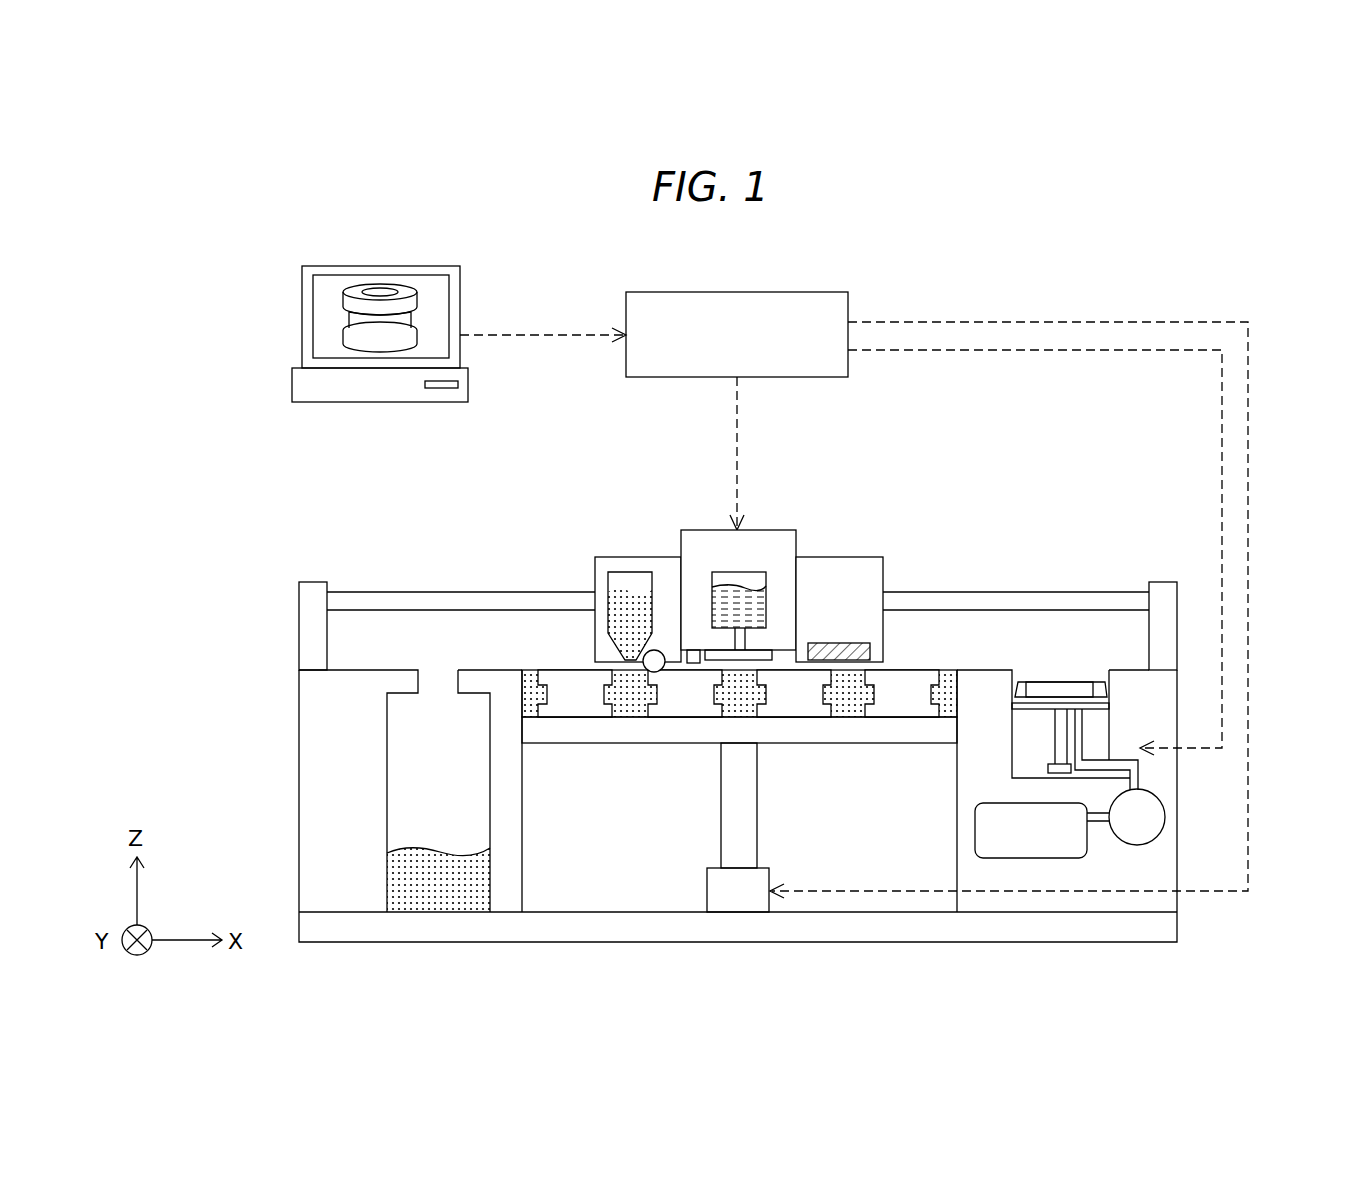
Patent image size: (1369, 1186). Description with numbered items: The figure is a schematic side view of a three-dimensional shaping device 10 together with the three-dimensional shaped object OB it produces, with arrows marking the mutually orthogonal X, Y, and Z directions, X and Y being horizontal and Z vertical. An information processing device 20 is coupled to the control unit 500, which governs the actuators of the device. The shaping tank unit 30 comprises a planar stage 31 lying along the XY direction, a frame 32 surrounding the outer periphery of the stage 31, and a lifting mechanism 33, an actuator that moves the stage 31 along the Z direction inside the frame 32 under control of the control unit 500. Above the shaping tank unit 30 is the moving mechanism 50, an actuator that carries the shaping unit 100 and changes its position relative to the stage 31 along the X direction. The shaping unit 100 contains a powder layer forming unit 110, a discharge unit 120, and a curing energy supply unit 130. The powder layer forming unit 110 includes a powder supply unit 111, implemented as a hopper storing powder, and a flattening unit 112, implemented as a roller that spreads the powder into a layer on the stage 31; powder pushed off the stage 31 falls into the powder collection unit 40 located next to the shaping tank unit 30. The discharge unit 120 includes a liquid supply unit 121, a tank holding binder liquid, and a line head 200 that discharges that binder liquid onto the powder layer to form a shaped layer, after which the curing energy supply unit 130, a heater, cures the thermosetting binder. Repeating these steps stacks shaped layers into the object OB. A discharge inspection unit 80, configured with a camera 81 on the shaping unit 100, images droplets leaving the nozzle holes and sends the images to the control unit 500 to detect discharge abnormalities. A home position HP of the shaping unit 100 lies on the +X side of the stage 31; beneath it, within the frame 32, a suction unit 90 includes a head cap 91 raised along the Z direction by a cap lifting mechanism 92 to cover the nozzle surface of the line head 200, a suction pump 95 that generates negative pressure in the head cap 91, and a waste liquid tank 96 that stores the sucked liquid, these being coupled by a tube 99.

The three-dimensional shaping device 10 is at (1107, 278).
The information processing device 20 is at (292, 387).
The control unit 500 is at (808, 292).
The moving mechanism 50 is at (1117, 583).
The powder collection unit 40 is at (396, 762).
The shaping tank unit 30 is at (706, 768).
The stage 31 is at (578, 745).
The frame 32 is at (957, 806).
The lifting mechanism 33 is at (707, 888).
The three-dimensional shaped object OB is at (795, 695).
The shaping unit 100 is at (723, 552).
The powder layer forming unit 110 is at (595, 583).
The powder supply unit 111 is at (610, 572).
The flattening unit 112 is at (657, 650).
The discharge unit 120 is at (740, 548).
The liquid supply unit 121 is at (752, 572).
The line head 200 is at (757, 650).
The discharge inspection unit 80 is at (645, 565).
The camera 81 is at (695, 650).
The curing energy supply unit 130 is at (865, 557).
The home position HP is at (1063, 533).
The suction unit 90 is at (1098, 754).
The head cap 91 is at (1057, 682).
The cap lifting mechanism 92 is at (1045, 770).
The tube 99 is at (1135, 768).
The suction pump 95 is at (1165, 817).
The waste liquid tank 96 is at (1065, 858).